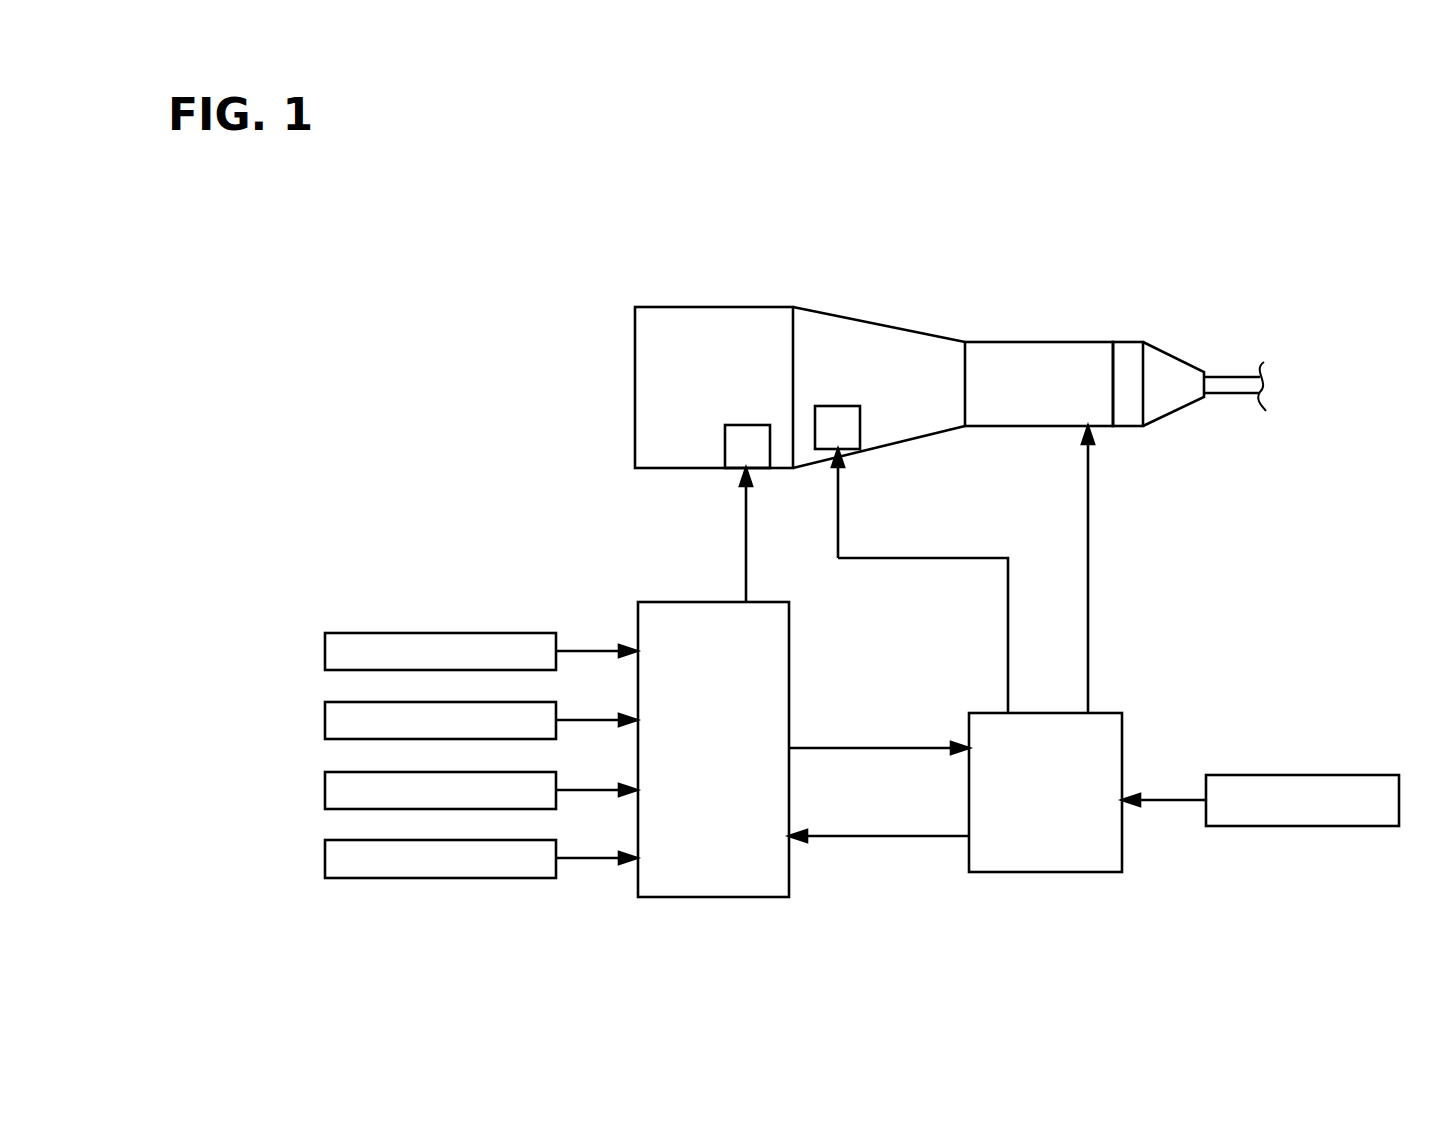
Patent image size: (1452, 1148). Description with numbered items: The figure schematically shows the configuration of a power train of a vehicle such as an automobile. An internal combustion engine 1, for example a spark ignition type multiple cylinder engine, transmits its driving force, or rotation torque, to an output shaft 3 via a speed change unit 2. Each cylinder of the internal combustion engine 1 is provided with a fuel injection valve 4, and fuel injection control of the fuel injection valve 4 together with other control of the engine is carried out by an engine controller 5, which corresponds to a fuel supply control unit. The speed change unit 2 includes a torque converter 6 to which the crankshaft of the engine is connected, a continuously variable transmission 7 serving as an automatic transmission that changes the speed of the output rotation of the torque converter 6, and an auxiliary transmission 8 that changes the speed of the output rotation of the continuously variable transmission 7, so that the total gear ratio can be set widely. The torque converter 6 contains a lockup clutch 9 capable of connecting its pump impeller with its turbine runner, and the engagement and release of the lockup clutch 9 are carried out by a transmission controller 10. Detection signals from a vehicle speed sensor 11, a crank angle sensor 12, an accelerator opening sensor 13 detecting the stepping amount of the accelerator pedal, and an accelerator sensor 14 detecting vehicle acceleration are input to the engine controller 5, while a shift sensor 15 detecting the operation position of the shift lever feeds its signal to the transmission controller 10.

The internal combustion engine 1 is at (708, 307).
The speed change unit 2 is at (1137, 190).
The output shaft 3 is at (1222, 362).
The fuel injection valve 4 is at (725, 446).
The engine controller 5 is at (663, 602).
The torque converter 6 is at (900, 328).
The continuously variable transmission 7 is at (1039, 348).
The auxiliary transmission 8 is at (1121, 350).
The lockup clutch 9 is at (860, 430).
The transmission controller 10 is at (987, 713).
The vehicle speed sensor 11 is at (325, 652).
The crank angle sensor 12 is at (325, 720).
The accelerator opening sensor 13 is at (325, 790).
The accelerator sensor 14 is at (325, 858).
The shift sensor 15 is at (1302, 775).